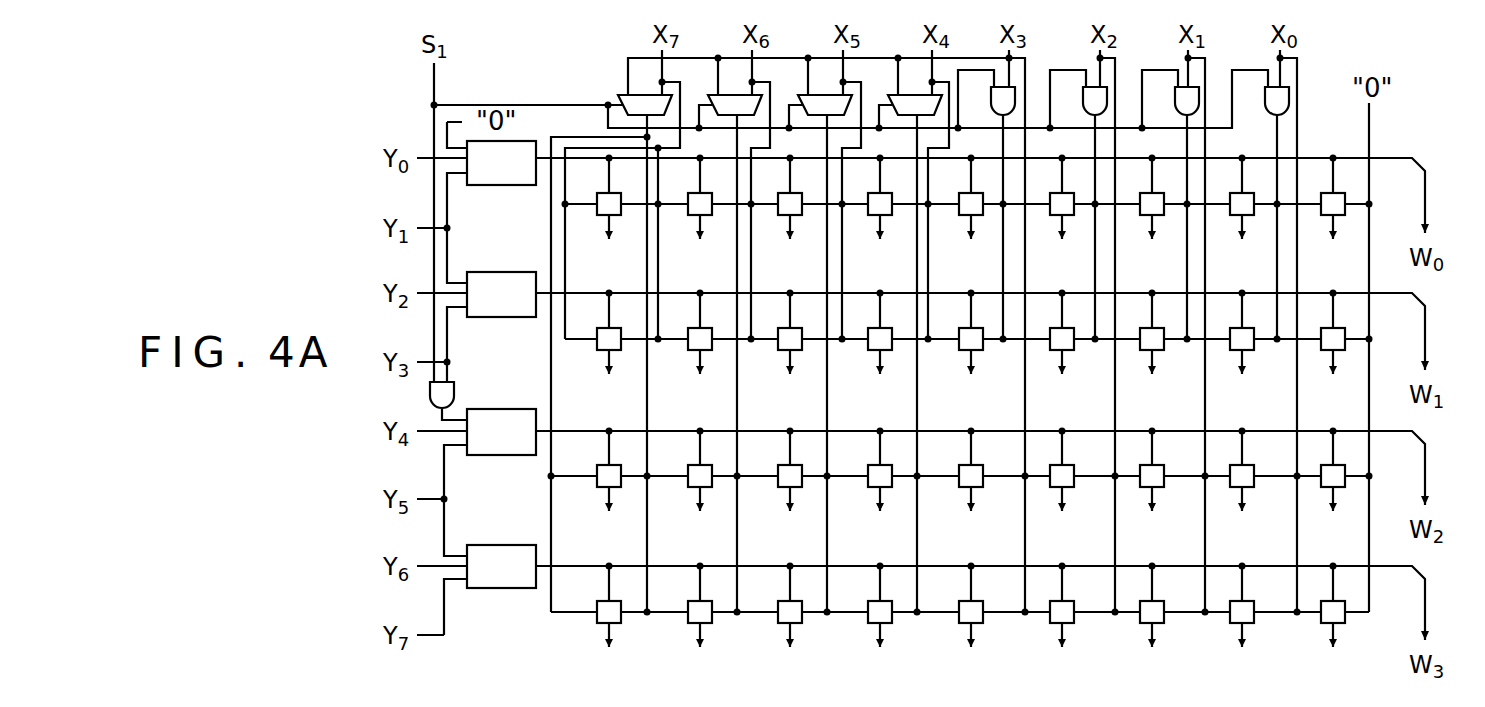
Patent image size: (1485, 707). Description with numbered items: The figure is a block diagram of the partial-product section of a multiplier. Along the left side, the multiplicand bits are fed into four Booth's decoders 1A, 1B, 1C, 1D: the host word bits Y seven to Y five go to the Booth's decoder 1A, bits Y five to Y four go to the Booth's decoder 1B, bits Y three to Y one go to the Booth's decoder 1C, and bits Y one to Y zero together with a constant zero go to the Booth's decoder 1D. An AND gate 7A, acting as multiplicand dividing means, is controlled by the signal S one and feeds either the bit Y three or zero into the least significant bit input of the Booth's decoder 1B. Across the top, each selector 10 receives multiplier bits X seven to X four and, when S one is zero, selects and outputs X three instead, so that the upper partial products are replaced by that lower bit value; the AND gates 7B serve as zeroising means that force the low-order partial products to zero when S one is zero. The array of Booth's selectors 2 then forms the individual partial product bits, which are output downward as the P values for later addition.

The Booth's decoder 1A is at (497, 588).
The Booth's decoder 1B is at (497, 455).
The Booth's decoder 1C is at (497, 317).
The Booth's decoder 1D is at (497, 185).
The Booth's selector 2 is at (1321, 193).
The AND gate (multiplicand dividing means) 7A is at (456, 393).
The AND gate (zeroising means) 7B is at (1265, 99).
The selector (bit extending means) 10 is at (890, 95).